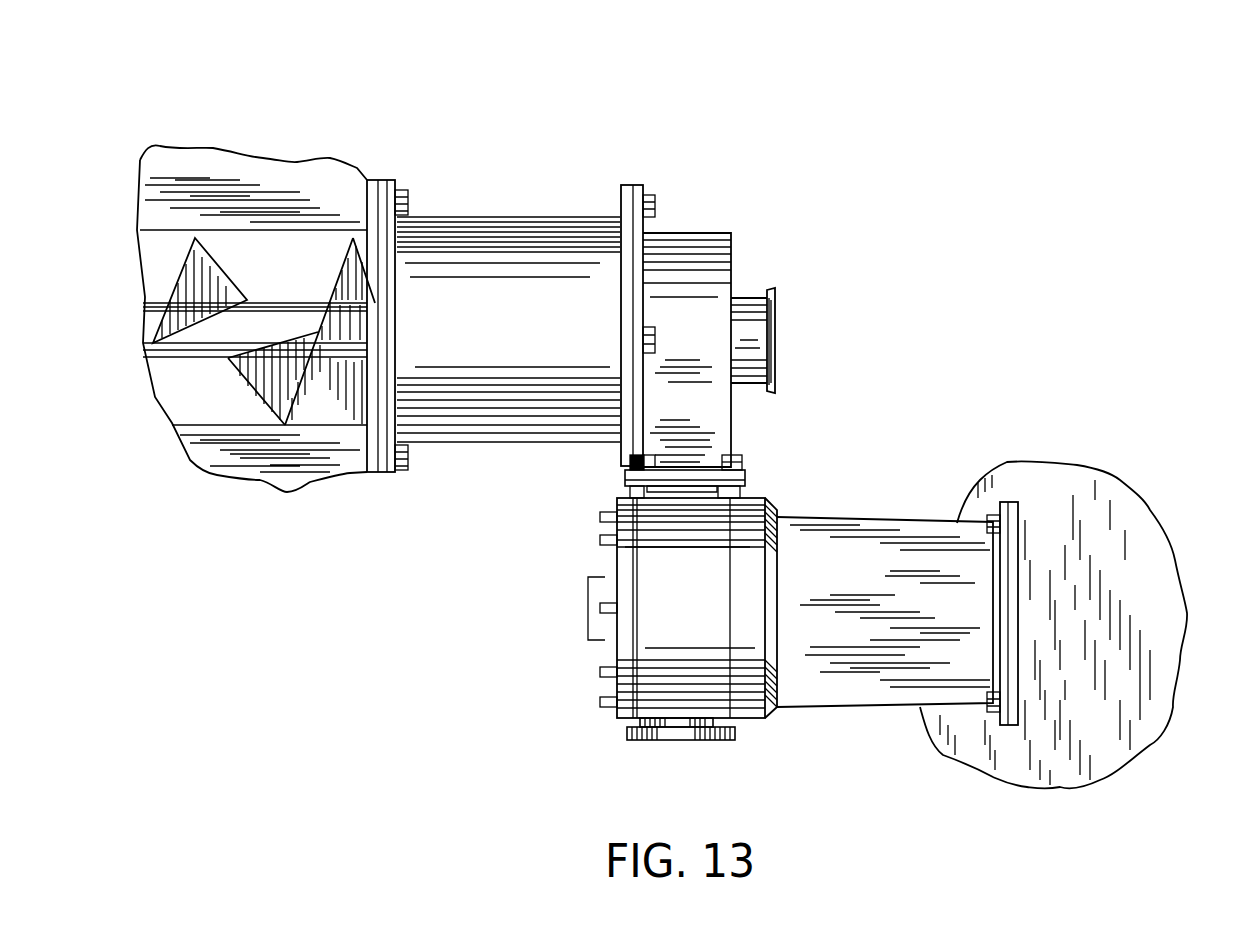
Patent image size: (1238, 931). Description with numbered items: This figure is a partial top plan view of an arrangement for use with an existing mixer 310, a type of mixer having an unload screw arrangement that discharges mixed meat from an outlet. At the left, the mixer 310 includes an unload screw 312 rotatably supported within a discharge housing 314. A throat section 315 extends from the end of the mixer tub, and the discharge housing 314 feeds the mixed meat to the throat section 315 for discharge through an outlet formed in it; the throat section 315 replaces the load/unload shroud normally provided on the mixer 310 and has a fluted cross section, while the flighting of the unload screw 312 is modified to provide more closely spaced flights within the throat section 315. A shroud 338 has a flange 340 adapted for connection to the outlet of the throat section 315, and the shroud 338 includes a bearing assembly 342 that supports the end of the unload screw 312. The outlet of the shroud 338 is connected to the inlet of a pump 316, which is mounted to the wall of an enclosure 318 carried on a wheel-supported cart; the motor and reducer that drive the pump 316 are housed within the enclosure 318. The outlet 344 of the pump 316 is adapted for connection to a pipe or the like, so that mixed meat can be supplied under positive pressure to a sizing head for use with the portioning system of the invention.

The mixer 310 is at (238, 126).
The unload screw 312 is at (215, 387).
The discharge housing 314 is at (340, 423).
The throat section 315 is at (533, 222).
The pump 316 is at (778, 495).
The enclosure 318 is at (1105, 500).
The shroud 338 is at (725, 232).
The flange 340 is at (628, 182).
The bearing assembly 342 is at (757, 292).
The outlet 344 is at (660, 735).